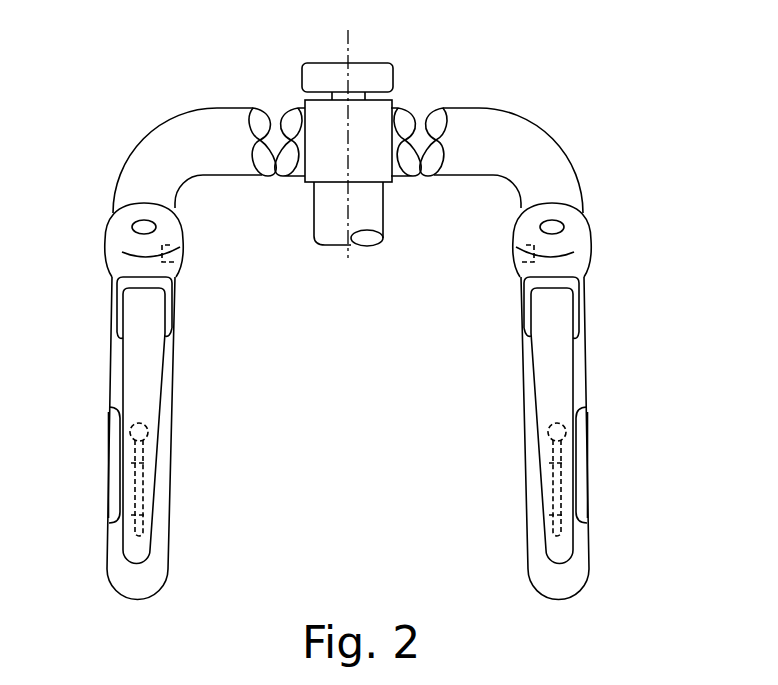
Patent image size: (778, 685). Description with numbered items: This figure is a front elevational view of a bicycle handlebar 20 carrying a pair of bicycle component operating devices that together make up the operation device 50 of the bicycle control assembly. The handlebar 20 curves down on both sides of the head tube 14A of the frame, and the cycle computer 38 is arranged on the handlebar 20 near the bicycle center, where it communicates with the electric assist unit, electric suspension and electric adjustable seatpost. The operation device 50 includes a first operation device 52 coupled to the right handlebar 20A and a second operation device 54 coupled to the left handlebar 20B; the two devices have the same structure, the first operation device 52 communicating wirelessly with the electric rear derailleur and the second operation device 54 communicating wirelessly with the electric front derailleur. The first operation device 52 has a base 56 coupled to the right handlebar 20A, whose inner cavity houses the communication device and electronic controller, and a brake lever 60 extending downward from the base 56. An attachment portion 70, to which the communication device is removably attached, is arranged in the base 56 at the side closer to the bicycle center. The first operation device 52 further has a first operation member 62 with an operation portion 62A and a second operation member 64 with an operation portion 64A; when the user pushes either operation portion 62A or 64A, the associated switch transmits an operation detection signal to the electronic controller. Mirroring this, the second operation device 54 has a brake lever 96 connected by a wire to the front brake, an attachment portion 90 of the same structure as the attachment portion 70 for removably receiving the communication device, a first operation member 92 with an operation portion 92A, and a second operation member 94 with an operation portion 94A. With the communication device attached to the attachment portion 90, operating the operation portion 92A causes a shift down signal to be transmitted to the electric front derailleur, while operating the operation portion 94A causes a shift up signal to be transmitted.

The operation device 50 is at (629, 84).
The handlebar 20 is at (468, 107).
The right handlebar 20A is at (173, 135).
The left handlebar 20B is at (522, 135).
The cycle computer 38 is at (370, 63).
The head tube 14A is at (370, 205).
The first operation device 52 is at (110, 268).
The second operation device 54 is at (588, 267).
The base 56 is at (118, 223).
The attachment portion 70 is at (177, 268).
The attachment portion 90 is at (517, 273).
The brake lever 60 is at (132, 360).
The brake lever 96 is at (563, 362).
The first operation member 62 is at (108, 435).
The operation portion 62A is at (112, 477).
The first operation member 92 is at (588, 435).
The operation portion 92A is at (583, 477).
The second operation member 64 is at (153, 478).
The operation portion 64A is at (153, 518).
The second operation member 94 is at (540, 450).
The operation portion 94A is at (540, 488).